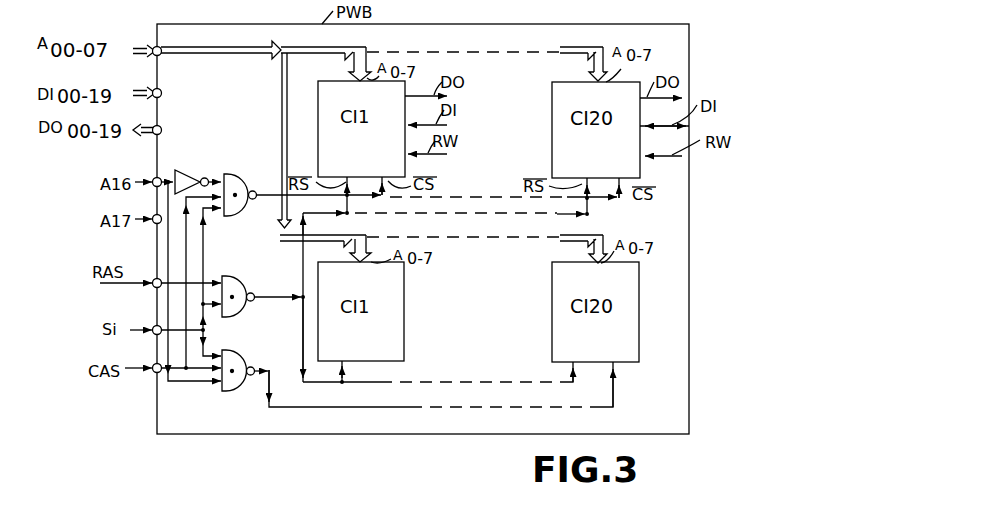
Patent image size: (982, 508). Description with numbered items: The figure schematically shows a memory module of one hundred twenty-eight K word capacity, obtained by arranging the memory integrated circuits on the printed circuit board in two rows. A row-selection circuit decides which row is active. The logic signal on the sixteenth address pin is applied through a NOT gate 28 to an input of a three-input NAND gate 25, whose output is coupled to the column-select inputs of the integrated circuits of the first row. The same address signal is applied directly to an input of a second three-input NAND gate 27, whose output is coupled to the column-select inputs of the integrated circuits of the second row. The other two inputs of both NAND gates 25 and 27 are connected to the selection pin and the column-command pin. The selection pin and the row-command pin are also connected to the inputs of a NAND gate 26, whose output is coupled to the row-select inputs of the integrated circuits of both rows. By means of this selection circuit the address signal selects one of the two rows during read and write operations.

The 3-input NAND gate 25 is at (238, 174).
The NAND gate 26 is at (242, 276).
The second 3-input NAND gate 27 is at (242, 350).
The NOT gate 28 is at (187, 170).